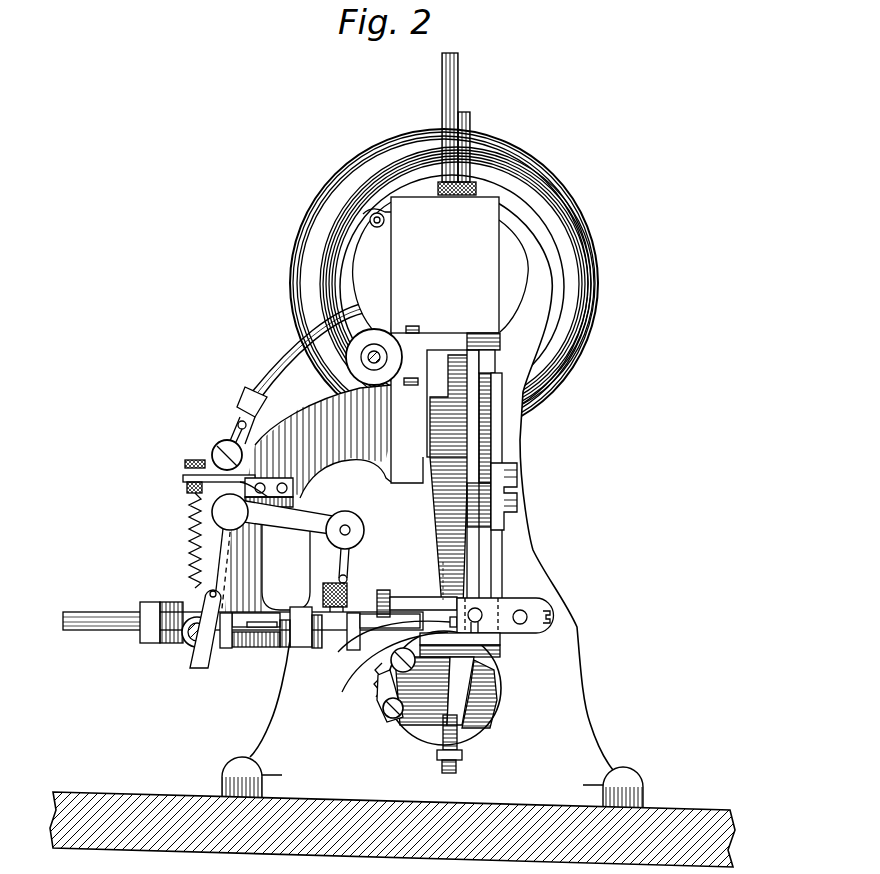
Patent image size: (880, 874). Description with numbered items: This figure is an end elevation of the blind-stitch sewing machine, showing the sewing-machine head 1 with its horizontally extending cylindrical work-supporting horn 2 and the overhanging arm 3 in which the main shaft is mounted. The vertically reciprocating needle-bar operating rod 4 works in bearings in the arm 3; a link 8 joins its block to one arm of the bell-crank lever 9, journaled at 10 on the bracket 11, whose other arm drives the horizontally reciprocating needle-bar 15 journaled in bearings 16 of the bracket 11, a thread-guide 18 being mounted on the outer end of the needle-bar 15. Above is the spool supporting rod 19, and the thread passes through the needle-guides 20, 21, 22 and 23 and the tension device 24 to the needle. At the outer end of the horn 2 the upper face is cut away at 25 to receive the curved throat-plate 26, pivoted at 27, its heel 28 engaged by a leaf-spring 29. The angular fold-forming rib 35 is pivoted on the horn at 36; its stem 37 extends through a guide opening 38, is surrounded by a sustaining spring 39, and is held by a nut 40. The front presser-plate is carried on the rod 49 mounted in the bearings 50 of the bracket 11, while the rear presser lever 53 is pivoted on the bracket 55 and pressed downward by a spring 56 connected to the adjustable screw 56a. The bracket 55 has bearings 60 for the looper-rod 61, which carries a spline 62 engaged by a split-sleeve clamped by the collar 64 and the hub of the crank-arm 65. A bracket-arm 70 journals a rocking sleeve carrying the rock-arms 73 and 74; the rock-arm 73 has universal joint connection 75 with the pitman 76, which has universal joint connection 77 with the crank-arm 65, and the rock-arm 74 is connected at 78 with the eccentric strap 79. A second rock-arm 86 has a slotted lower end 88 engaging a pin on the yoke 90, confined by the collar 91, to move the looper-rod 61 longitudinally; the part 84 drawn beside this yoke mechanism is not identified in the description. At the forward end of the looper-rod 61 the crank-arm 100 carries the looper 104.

The sewing-machine head 1 is at (592, 718).
The work-supporting horn 2 is at (499, 701).
The overhanging arm 3 is at (512, 253).
The needle-bar operating rod 4 is at (470, 124).
The link 8 is at (492, 425).
The bell-crank lever 9 is at (497, 538).
The journal of bell-crank lever 10 is at (510, 498).
The bracket 11 is at (453, 520).
The needle-bar 15 is at (481, 611).
The needle-bar bearings 16 is at (465, 612).
The thread-guide 18 is at (493, 636).
The spool supporting rod 19 is at (458, 72).
The needle-guide 20 is at (386, 222).
The needle-guide 21 is at (420, 330).
The needle-guide 22 is at (409, 378).
The needle-guide 23 is at (443, 607).
The tension device 24 is at (383, 344).
The cut-away portion 25 is at (493, 668).
The throat-plate 26 is at (423, 607).
The pivot of throat-plate 27 is at (376, 674).
The heel of throat-plate 28 is at (384, 692).
The leaf-spring 29 is at (388, 667).
The fold-forming rib 35 is at (460, 683).
The pivot of rib 36 is at (405, 717).
The stem 37 is at (455, 767).
The guide opening 38 is at (463, 740).
The sustaining spring 39 is at (440, 735).
The nut 40 is at (462, 755).
The rod 49 is at (529, 612).
The bearings 50 is at (527, 613).
The lever 53 is at (366, 646).
The bracket 55 is at (333, 416).
The spring 56 is at (197, 531).
The adjustable screw 56a is at (215, 457).
The bearings 60 is at (153, 598).
The looper-rod 61 is at (87, 627).
The spline 62 is at (262, 640).
The collar 64 is at (283, 640).
The crank-arm 65 is at (322, 600).
The bracket-arm 70 is at (308, 508).
The rock-arm 73 is at (303, 528).
The rock-arm 74 is at (251, 464).
The universal joint connection 75 is at (353, 526).
The link or pitman 76 is at (354, 560).
The universal joint connection 77 is at (325, 651).
The connection of rock-arm 78 is at (222, 442).
The eccentric strap 79 is at (297, 348).
The nut 84 is at (190, 648).
The rock-arm 86 is at (213, 554).
The slotted lower end 88 is at (204, 602).
The yoke 90 is at (226, 648).
The collar 91 is at (215, 635).
The crank-arm 100 is at (380, 598).
The looper 104 is at (402, 606).